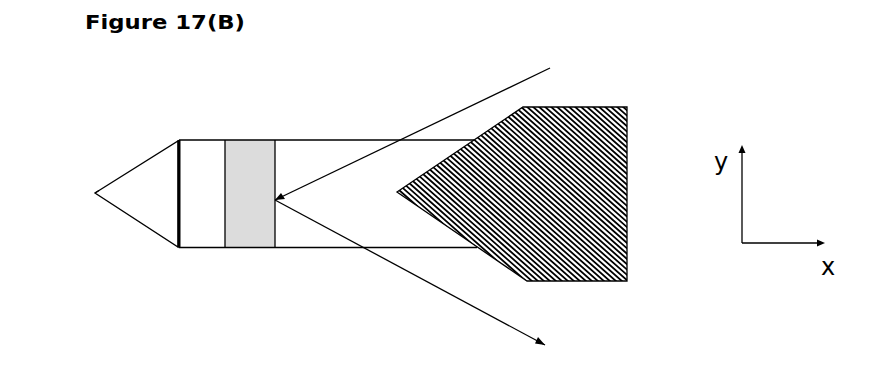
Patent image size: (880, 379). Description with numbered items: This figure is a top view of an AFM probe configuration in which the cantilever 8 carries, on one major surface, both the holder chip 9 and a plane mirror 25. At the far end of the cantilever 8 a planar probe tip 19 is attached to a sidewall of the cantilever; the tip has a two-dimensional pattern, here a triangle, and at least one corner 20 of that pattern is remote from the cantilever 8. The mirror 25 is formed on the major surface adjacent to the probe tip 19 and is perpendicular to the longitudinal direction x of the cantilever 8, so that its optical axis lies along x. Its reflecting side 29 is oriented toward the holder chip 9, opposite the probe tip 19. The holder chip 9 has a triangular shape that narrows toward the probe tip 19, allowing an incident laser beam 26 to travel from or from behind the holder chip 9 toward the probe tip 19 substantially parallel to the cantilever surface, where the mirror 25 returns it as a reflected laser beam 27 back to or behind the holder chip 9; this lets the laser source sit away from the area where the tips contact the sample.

The cantilever 8 is at (358, 215).
The holder chip 9 is at (620, 120).
The planar probe tip 19 is at (164, 216).
The corner of planar tip 20 is at (95, 193).
The mirror 25 is at (264, 201).
The incident laser beam 26 is at (412, 122).
The reflected laser beam 27 is at (410, 282).
The reflecting side of the mirror 29 is at (275, 158).